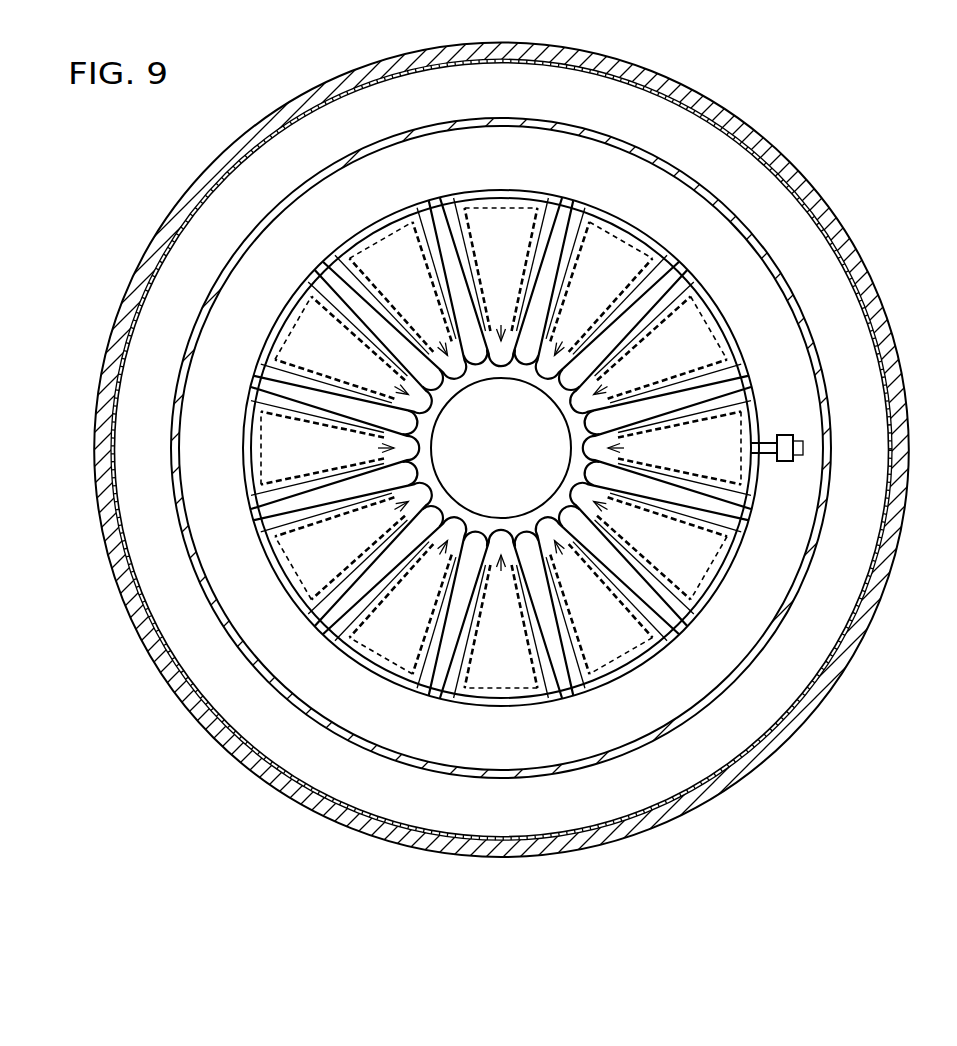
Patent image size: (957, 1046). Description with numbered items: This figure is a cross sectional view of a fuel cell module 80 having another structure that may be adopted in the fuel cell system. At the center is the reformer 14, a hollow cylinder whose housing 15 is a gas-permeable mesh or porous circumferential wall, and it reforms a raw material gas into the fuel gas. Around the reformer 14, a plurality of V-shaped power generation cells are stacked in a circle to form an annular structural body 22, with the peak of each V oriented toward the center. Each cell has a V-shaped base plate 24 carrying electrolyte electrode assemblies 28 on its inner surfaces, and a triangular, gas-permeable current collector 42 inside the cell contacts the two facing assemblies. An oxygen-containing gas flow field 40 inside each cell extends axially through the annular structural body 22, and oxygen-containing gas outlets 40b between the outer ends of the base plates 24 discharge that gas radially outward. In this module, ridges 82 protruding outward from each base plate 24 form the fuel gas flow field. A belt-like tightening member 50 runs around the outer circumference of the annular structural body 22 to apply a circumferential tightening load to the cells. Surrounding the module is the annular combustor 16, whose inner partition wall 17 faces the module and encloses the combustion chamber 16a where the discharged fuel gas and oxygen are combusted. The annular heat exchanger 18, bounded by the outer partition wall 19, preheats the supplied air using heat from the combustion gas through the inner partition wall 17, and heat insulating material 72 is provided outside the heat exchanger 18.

The fuel cell module 80 is at (121, 141).
The combustor 16 is at (240, 240).
The combustion chamber 16a is at (250, 275).
The inner partition wall 17 is at (196, 332).
The heat exchanger 18 is at (845, 240).
The outer partition wall 19 is at (865, 280).
The annular structural body 22 is at (383, 232).
The base plate 24 is at (469, 208).
The electrolyte electrode assembly 28 is at (337, 323).
The ridge 82 is at (415, 222).
The oxygen-containing gas flow field 40 is at (688, 338).
The oxygen-containing gas outlet 40b is at (612, 228).
The current collector 42 is at (627, 243).
The tightening member 50 is at (633, 677).
The reformer 14 is at (455, 540).
The housing 15 is at (486, 518).
The heat insulating material 72 is at (818, 690).